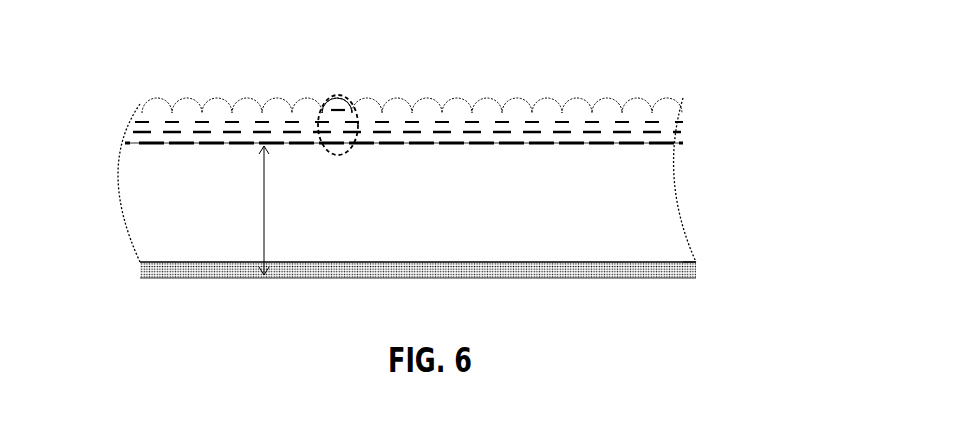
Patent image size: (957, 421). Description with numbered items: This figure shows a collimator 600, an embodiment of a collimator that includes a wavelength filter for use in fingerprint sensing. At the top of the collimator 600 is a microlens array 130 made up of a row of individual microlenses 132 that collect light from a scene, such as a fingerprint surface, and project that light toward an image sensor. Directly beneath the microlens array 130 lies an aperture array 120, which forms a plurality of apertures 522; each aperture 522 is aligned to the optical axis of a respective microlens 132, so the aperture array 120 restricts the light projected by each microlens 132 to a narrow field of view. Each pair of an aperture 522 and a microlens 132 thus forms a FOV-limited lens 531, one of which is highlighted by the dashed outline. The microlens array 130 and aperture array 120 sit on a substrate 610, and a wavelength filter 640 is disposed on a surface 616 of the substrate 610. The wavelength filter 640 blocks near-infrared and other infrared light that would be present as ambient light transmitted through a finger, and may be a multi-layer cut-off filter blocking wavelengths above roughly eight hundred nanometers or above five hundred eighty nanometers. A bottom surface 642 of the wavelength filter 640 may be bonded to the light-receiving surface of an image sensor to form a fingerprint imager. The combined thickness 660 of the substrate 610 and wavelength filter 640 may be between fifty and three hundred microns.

The collimator 600 is at (419, 184).
The microlens array 130 is at (692, 106).
The aperture array 120 is at (688, 128).
The microlens 132 is at (336, 127).
The FOV-limited lens 531 is at (325, 97).
The aperture 522 is at (345, 95).
The substrate 610 is at (676, 197).
The surface 616 is at (681, 265).
The wavelength filter 640 is at (140, 265).
The bottom surface 642 is at (574, 279).
The combined thickness 660 is at (263, 210).